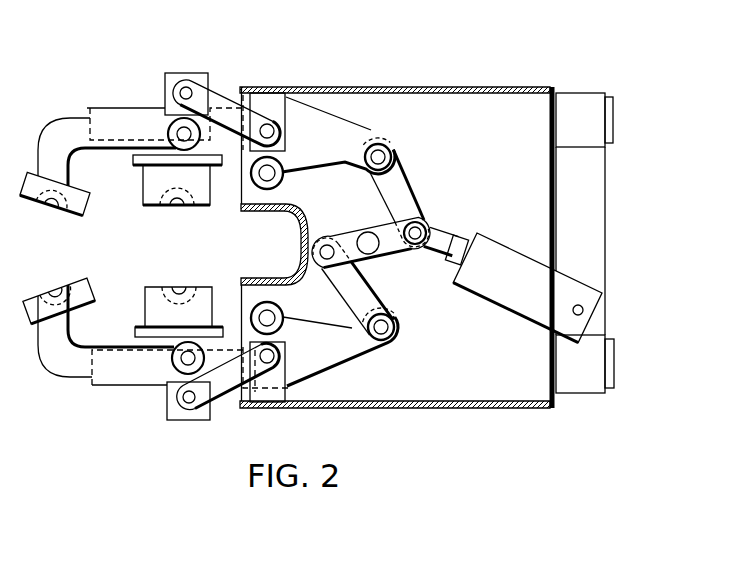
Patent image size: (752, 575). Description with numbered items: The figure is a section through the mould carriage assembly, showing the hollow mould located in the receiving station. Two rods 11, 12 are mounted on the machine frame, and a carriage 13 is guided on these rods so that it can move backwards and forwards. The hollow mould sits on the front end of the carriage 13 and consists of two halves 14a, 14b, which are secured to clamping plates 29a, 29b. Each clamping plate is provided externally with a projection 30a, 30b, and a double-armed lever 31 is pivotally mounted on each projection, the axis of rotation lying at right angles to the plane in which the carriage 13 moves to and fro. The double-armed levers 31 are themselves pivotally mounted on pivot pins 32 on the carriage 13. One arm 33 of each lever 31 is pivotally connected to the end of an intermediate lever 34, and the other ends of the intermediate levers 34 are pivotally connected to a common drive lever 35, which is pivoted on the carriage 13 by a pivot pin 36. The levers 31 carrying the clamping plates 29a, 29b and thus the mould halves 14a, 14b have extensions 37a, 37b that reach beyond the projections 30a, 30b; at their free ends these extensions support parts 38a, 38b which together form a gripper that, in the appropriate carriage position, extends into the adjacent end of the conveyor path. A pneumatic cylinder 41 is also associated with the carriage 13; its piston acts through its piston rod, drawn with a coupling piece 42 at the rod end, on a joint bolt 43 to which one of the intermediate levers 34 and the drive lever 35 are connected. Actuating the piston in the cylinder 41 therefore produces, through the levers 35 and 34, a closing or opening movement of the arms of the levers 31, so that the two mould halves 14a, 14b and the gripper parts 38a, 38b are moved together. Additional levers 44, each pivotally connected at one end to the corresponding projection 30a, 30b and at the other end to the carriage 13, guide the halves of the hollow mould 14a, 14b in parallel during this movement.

The rod 11 is at (125, 386).
The rod 12 is at (128, 108).
The carriage 13 is at (422, 409).
The mould half 14a is at (152, 287).
The mould half 14b is at (150, 206).
The clamping plate 29a is at (220, 327).
The clamping plate 29b is at (220, 165).
The projection 30a is at (175, 420).
The projection 30b is at (200, 73).
The double-armed lever 31 is at (323, 127).
The pivot pin 32 is at (267, 318).
The arm of lever 33 is at (363, 138).
The intermediate lever 34 is at (402, 193).
The drive lever 35 is at (342, 233).
The pivot pin 36 is at (368, 233).
The extension 37a is at (82, 367).
The extension 37b is at (77, 128).
The gripper part 38a is at (28, 299).
The gripper part 38b is at (25, 199).
The pneumatic cylinder 41 is at (508, 298).
The piston rod coupling 42 is at (460, 262).
The joint bolt 43 is at (423, 228).
The lever 44 is at (217, 98).